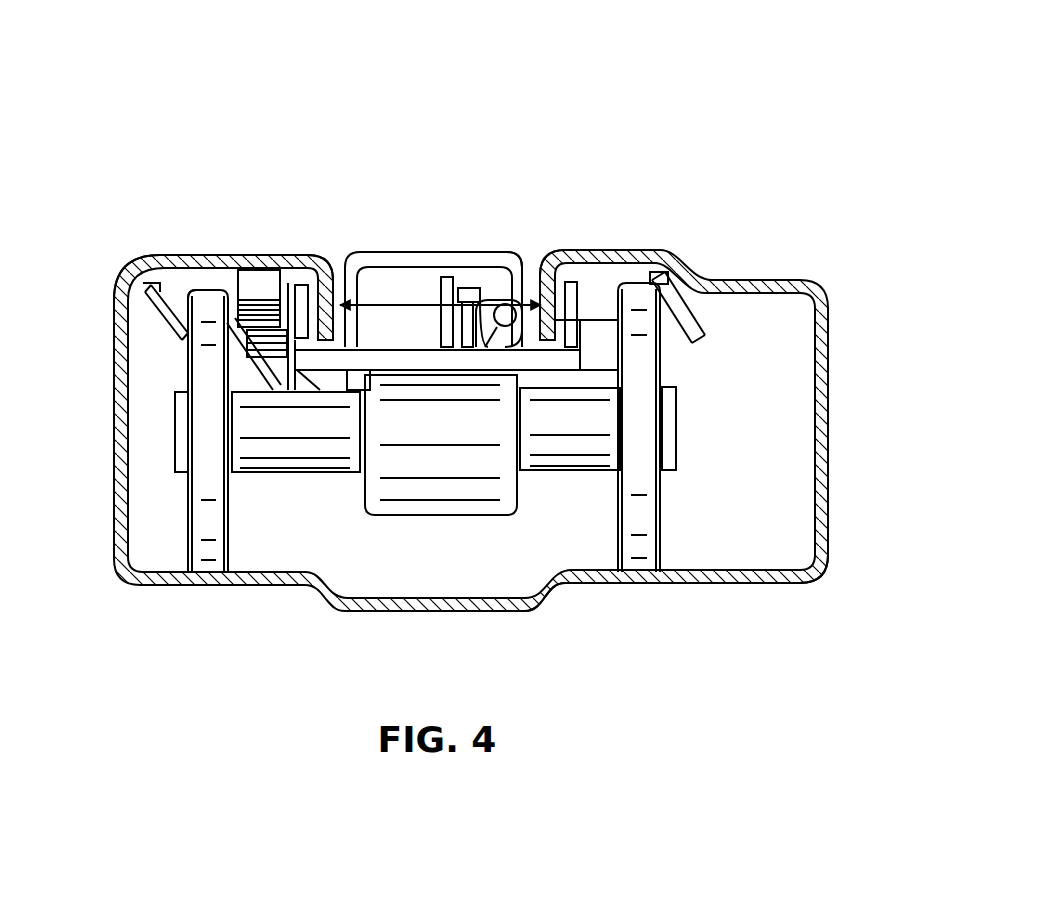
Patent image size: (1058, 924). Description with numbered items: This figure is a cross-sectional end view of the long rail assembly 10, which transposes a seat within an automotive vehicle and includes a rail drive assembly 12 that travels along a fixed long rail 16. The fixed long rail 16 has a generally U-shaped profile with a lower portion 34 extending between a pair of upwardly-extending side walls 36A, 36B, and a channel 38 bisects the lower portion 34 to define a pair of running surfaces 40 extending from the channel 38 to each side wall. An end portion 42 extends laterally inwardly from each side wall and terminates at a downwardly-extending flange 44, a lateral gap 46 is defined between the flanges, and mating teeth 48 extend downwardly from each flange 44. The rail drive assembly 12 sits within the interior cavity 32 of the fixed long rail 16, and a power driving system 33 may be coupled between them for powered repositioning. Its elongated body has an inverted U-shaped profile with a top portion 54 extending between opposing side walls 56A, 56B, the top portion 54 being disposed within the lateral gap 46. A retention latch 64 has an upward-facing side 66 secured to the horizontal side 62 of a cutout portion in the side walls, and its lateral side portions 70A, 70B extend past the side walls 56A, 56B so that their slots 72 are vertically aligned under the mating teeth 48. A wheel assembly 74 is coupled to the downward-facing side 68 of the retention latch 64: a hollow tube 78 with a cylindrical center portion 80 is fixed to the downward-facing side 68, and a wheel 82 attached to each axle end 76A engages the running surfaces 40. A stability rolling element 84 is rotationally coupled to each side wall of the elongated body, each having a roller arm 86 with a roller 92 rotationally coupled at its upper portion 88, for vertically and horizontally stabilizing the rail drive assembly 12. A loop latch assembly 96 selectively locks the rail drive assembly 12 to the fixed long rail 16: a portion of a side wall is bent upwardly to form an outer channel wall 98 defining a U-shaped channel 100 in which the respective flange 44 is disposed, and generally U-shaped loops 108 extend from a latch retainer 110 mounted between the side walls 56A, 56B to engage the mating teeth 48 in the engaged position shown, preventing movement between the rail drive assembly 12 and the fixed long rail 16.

The long rail assembly 10 is at (714, 85).
The rail drive assembly 12 is at (377, 230).
The fixed long rail 16 is at (811, 656).
The interior cavity 32 is at (418, 568).
The power driving system 33 is at (258, 254).
The lower portion 34 is at (623, 601).
The side wall 36A is at (826, 322).
The side wall 36B is at (120, 512).
The channel 38 is at (522, 608).
The running surfaces 40 is at (672, 584).
The end portion 42 is at (787, 282).
The flange 44 is at (317, 262).
The lateral gap 46 is at (440, 323).
The mating teeth 48 is at (285, 290).
The top portion 54 is at (491, 330).
The side wall 56A is at (521, 268).
The side wall 56B is at (337, 300).
The horizontal side 62 is at (522, 352).
The retention latch 64 is at (410, 345).
The upward-facing side 66 is at (430, 335).
The downward-facing side 68 is at (361, 376).
The lateral side portion 70A is at (588, 355).
The lateral side portion 70B is at (300, 363).
The slots 72 is at (322, 372).
The wheel assembly 74 is at (331, 507).
The axle end 76A is at (176, 472).
The hollow tube 78 is at (582, 482).
The center portion 80 is at (418, 434).
The wheel 82 is at (650, 565).
The stability rolling element 84 is at (140, 265).
The roller arm 86 is at (204, 287).
The upper portion 88 is at (182, 296).
The roller 92 is at (183, 332).
The loop latch assembly 96 is at (542, 228).
The outer channel wall 98 is at (580, 333).
The channel 100 is at (532, 280).
The loops 108 is at (593, 327).
The latch retainer 110 is at (479, 290).